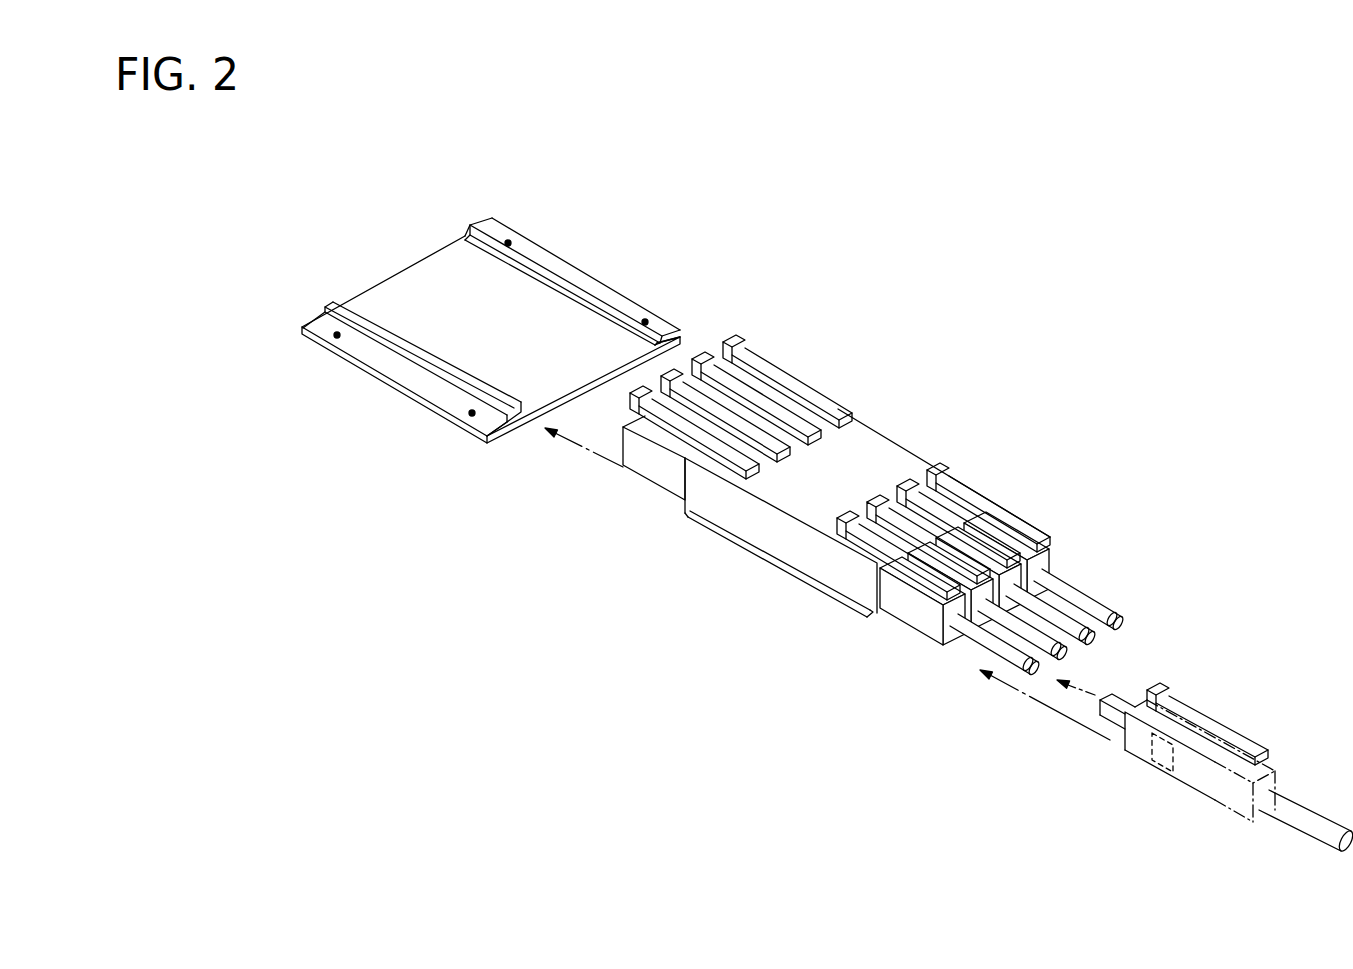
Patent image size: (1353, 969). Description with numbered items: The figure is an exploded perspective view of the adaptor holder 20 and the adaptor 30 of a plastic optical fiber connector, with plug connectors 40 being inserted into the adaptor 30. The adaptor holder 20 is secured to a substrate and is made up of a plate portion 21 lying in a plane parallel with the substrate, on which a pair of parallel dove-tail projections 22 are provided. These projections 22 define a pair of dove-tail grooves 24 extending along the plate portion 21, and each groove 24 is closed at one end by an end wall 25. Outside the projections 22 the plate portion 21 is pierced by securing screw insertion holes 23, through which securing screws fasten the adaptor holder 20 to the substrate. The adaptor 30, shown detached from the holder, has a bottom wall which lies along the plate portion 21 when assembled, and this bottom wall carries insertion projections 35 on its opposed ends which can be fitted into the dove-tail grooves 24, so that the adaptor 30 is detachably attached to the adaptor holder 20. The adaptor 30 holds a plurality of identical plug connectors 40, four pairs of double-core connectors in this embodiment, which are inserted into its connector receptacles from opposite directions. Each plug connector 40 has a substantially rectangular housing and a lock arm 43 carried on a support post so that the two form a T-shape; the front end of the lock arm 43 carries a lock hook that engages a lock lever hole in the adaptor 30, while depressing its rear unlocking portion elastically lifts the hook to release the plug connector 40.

The adaptor holder 20 is at (505, 352).
The plate portion 21 is at (397, 293).
The dove-tail projections 22 is at (531, 265).
The securing screw insertion holes 23 is at (645, 322).
The dove-tail grooves 24 is at (659, 342).
The end walls 25 is at (467, 240).
The adaptor 30 is at (840, 447).
The insertion projections 35 is at (723, 537).
The plug connector 40 is at (634, 474).
The lock arm 43 is at (770, 370).